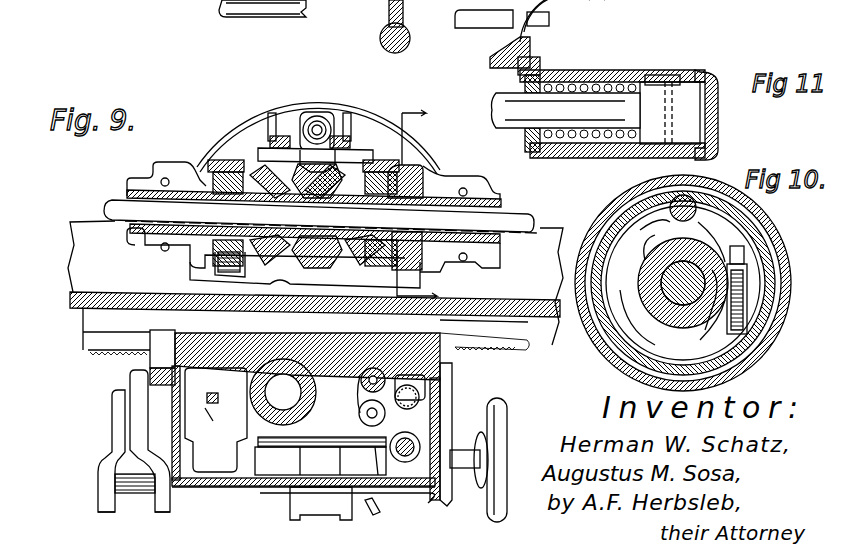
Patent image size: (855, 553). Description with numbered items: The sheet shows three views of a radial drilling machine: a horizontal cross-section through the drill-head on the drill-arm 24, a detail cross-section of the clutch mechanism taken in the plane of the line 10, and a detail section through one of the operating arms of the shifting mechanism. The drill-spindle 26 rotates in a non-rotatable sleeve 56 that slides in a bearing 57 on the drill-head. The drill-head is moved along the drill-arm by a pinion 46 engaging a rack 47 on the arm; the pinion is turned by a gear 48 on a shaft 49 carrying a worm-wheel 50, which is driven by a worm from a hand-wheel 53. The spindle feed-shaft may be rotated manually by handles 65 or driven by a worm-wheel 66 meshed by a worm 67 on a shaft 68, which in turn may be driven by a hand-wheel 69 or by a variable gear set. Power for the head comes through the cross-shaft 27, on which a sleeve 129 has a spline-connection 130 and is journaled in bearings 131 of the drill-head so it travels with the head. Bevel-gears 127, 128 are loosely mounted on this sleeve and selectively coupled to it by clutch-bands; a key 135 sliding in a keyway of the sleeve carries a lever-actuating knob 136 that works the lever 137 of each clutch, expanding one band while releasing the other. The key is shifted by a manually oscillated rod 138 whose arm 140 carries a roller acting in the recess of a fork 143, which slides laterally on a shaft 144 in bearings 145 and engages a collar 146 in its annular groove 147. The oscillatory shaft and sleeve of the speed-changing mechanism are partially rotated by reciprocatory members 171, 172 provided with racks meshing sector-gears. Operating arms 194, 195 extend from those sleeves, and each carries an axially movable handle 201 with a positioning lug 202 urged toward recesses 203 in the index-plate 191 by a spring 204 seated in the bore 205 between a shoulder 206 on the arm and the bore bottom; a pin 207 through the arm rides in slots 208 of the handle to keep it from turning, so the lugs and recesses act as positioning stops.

In FIG. 9, the section line 10 is at (432, 206).
In FIG. 9, the drill-arm 24 is at (535, 262).
In FIG. 9, the drill-spindle 26 is at (260, 405).
In FIG. 11, the drill-spindle 26 is at (458, 18).
In FIG. 9, the cross-shaft 27 is at (537, 218).
In FIG. 10, the cross-shaft 27 is at (645, 300).
In FIG. 9, the pinion 46 is at (447, 372).
In FIG. 9, the rack 47 is at (518, 352).
In FIG. 9, the gear 48 is at (384, 405).
In FIG. 9, the shaft 49 is at (360, 413).
In FIG. 9, the worm-wheel 50 is at (412, 387).
In FIG. 9, the hand-wheel 53 is at (505, 440).
In FIG. 9, the sleeve 56 is at (123, 392).
In FIG. 9, the bearing 57 is at (137, 373).
In FIG. 9, the handles 65 is at (292, 511).
In FIG. 9, the worm-wheel 66 is at (330, 455).
In FIG. 9, the worm 67 is at (412, 440).
In FIG. 9, the shaft 68 is at (417, 442).
In FIG. 9, the hand-wheel 69 is at (394, 511).
In FIG. 9, the bevel-gear 127 is at (258, 170).
In FIG. 9, the bevel-gear 128 is at (415, 180).
In FIG. 9, the sleeve 129 is at (501, 203).
In FIG. 9, the spline-connection 130 is at (145, 245).
In FIG. 10, the spline-connection 130 is at (618, 357).
In FIG. 9, the bearings 131 is at (177, 168).
In FIG. 9, the key 135 is at (340, 242).
In FIG. 9, the lever-actuating knob 136 is at (418, 248).
In FIG. 9, the lever 137 is at (210, 262).
In FIG. 10, the lever 137 is at (718, 232).
In FIG. 9, the oscillated rod 138 is at (312, 124).
In FIG. 9, the arm 140 is at (282, 135).
In FIG. 9, the fork 143 is at (322, 122).
In FIG. 9, the shaft 144 is at (265, 152).
In FIG. 9, the bearings 145 is at (340, 162).
In FIG. 9, the collar 146 is at (398, 162).
In FIG. 9, the annular groove 147 is at (305, 281).
In FIG. 9, the reciprocatory member 171 is at (160, 377).
In FIG. 9, the reciprocatory member 172 is at (162, 355).
In FIG. 9, the index-plate 191 is at (135, 493).
In FIG. 11, the index-plate 191 is at (492, 50).
In FIG. 9, the operating arm 194 is at (102, 499).
In FIG. 9, the operating arm 195 is at (166, 502).
In FIG. 11, the handle 201 is at (718, 102).
In FIG. 11, the positioning lug 202 is at (535, 58).
In FIG. 11, the recesses 203 is at (522, 78).
In FIG. 11, the spring 204 is at (620, 84).
In FIG. 11, the bore 205 is at (600, 70).
In FIG. 11, the shoulder 206 is at (660, 75).
In FIG. 11, the pin 207 is at (690, 72).
In FIG. 11, the slots 208 is at (690, 72).